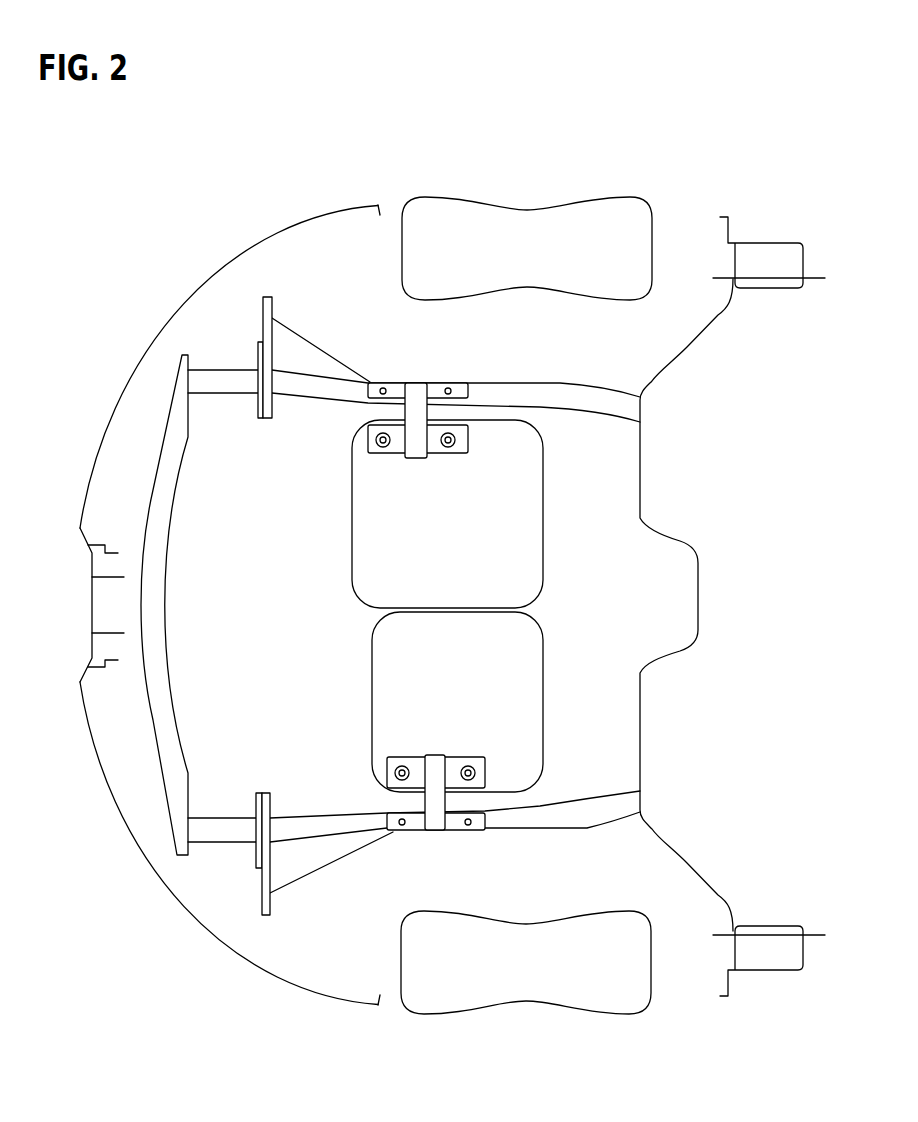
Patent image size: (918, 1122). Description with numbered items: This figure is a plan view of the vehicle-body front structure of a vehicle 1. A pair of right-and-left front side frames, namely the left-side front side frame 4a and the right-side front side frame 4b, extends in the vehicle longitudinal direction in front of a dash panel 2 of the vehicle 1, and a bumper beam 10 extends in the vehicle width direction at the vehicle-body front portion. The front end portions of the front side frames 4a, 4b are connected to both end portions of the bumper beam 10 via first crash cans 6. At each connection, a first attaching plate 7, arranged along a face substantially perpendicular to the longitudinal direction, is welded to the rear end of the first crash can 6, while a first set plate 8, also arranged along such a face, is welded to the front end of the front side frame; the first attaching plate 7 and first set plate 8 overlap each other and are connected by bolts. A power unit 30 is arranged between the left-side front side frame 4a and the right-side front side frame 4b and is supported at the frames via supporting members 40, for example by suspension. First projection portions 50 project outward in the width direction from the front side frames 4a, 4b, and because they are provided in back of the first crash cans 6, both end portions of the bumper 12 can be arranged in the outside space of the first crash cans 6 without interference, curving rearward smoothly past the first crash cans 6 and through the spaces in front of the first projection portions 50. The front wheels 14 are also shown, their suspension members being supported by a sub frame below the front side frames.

The vehicle 1 is at (695, 109).
The dash panel 2 is at (642, 473).
The left-side front side frame 4a is at (532, 822).
The right-side front side frame 4b is at (533, 398).
The first crash can 6 is at (222, 378).
The first attaching plate 7 is at (254, 404).
The first set plate 8 is at (274, 403).
The bumper beam 10 is at (162, 515).
The bumper 12 is at (178, 310).
The front wheel 14 is at (537, 205).
The power unit 30 is at (365, 518).
The supporting member 40 is at (418, 393).
The first projection portion 50 is at (320, 357).